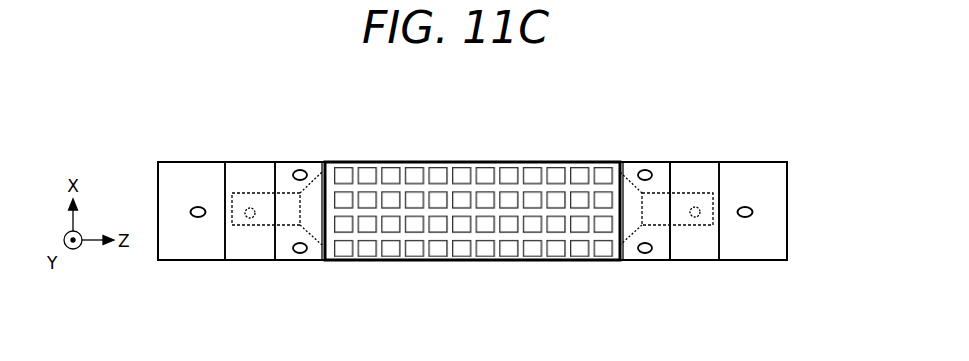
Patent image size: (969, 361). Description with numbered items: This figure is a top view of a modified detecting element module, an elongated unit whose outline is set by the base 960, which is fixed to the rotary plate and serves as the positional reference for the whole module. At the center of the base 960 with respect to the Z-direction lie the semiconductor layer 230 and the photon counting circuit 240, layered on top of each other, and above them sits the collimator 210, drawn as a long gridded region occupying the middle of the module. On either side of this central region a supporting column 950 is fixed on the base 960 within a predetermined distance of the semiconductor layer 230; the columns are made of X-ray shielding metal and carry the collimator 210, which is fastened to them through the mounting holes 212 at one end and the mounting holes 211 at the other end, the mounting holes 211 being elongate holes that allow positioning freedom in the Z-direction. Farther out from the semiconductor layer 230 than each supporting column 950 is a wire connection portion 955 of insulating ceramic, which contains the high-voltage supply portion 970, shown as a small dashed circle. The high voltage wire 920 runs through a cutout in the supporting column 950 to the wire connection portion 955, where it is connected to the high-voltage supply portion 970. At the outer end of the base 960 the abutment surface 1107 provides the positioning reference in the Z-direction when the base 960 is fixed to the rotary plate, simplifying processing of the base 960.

The abutment surface 1107 is at (788, 192).
The base 960 is at (180, 162).
The wire connection portion 955 is at (245, 162).
The supporting column 950 is at (297, 162).
The collimator 210 is at (522, 162).
The semiconductor layer 230 is at (653, 124).
The photon counting circuit 240 is at (645, 211).
The high voltage wire 920 is at (703, 162).
The high-voltage supply portion 970 is at (250, 216).
The mounting holes 212 is at (298, 182).
The mounting holes 211 is at (646, 182).